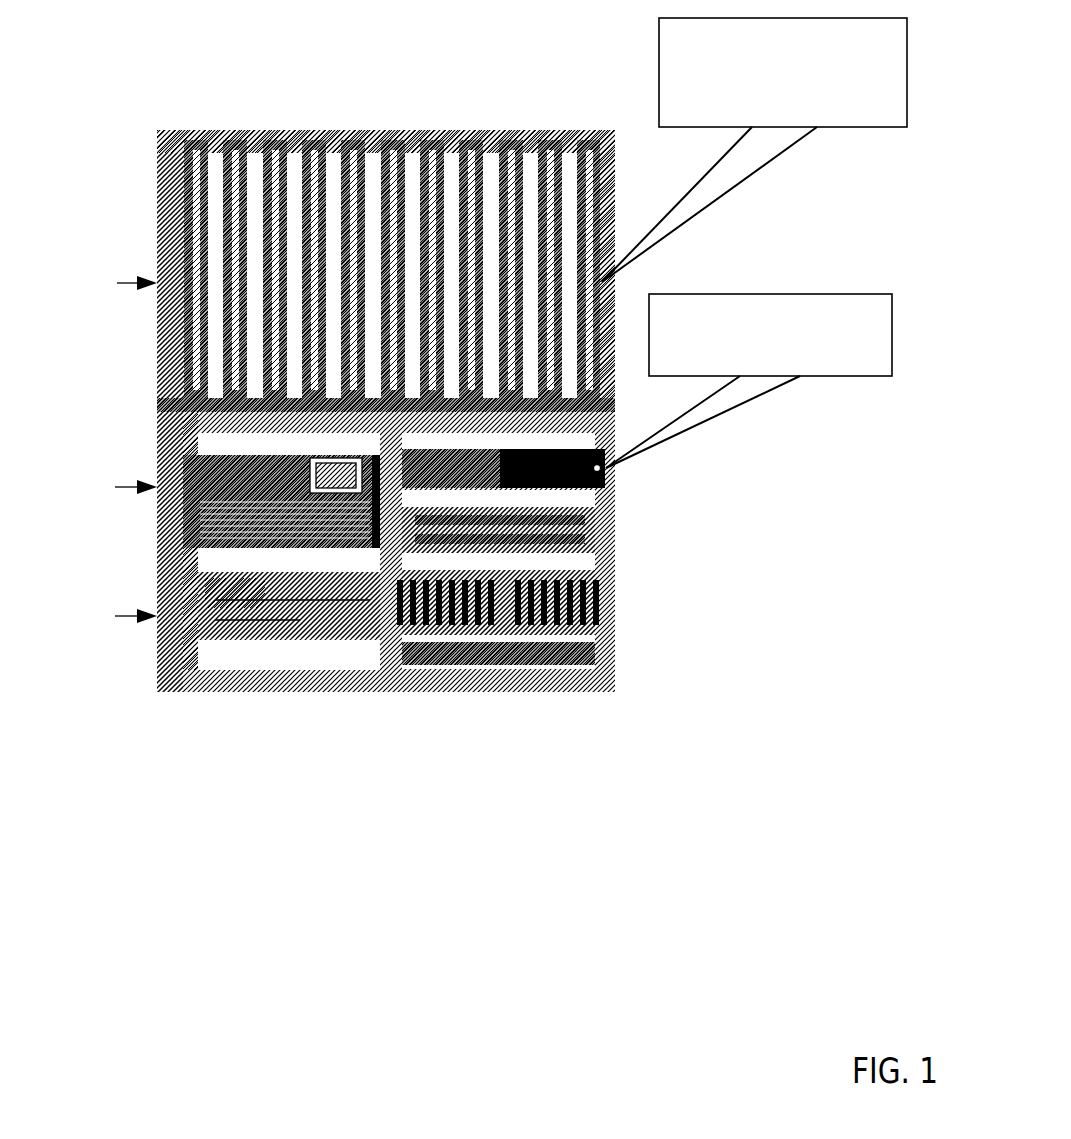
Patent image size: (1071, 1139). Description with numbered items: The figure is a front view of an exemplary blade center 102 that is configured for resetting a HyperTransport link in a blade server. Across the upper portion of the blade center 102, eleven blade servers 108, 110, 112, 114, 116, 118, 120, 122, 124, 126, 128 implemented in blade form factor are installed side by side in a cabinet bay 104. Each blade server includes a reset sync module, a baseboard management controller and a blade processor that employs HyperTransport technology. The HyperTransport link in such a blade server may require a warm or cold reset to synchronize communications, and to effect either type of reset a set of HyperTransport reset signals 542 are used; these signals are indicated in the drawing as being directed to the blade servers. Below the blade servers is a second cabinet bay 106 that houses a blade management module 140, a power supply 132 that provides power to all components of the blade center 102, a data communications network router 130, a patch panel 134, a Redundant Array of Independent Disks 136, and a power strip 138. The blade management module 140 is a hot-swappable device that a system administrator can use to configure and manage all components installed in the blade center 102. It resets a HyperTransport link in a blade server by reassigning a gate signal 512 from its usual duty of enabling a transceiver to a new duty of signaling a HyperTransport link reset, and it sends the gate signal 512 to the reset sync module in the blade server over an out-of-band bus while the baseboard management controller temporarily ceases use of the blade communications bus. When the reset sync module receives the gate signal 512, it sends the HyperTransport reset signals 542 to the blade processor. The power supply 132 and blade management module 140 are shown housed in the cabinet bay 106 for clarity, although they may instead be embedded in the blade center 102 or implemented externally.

The blade center 102 is at (183, 742).
The cabinet bay 104 is at (165, 177).
The cabinet bay 106 is at (157, 438).
The blade server 108 is at (196, 124).
The blade server 110 is at (235, 124).
The blade server 112 is at (274, 124).
The blade server 114 is at (313, 124).
The blade server 116 is at (353, 124).
The blade server 118 is at (392, 124).
The blade server 120 is at (431, 124).
The blade server 122 is at (471, 124).
The blade server 124 is at (510, 124).
The blade server 126 is at (550, 124).
The blade server 128 is at (589, 124).
The data communications network router 130 is at (113, 645).
The power supply 132 is at (113, 528).
The patch panel 134 is at (636, 537).
The RAID array 136 is at (636, 605).
The power strip 138 is at (636, 657).
The blade management module 140 is at (636, 475).
The gate signal 512 is at (850, 346).
The HyperTransport reset signals 542 is at (840, 101).